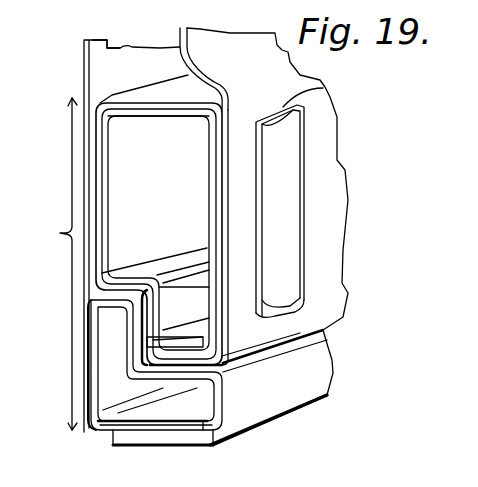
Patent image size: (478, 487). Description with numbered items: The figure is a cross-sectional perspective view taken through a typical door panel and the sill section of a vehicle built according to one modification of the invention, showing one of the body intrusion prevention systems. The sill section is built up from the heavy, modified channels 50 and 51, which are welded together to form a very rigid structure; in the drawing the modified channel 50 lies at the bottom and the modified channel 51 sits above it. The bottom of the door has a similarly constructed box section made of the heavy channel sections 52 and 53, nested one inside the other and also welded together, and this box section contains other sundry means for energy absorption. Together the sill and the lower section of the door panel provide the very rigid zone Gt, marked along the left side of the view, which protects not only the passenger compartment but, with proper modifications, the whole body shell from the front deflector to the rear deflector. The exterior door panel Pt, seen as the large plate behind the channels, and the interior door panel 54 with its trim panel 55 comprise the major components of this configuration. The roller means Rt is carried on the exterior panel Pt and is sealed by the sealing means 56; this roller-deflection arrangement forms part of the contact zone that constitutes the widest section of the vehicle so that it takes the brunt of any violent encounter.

The exterior door panel Pt is at (207, 29).
The roller means Rt is at (300, 152).
The sealing means 56 is at (323, 88).
The interior door panel 54 is at (114, 47).
The trim panel 55 is at (83, 77).
The rigid zone Gt is at (52, 264).
The heavy channel section 52 is at (162, 83).
The heavy channel section 53 is at (104, 160).
The modified channel 51 is at (84, 381).
The modified channel 50 is at (167, 447).